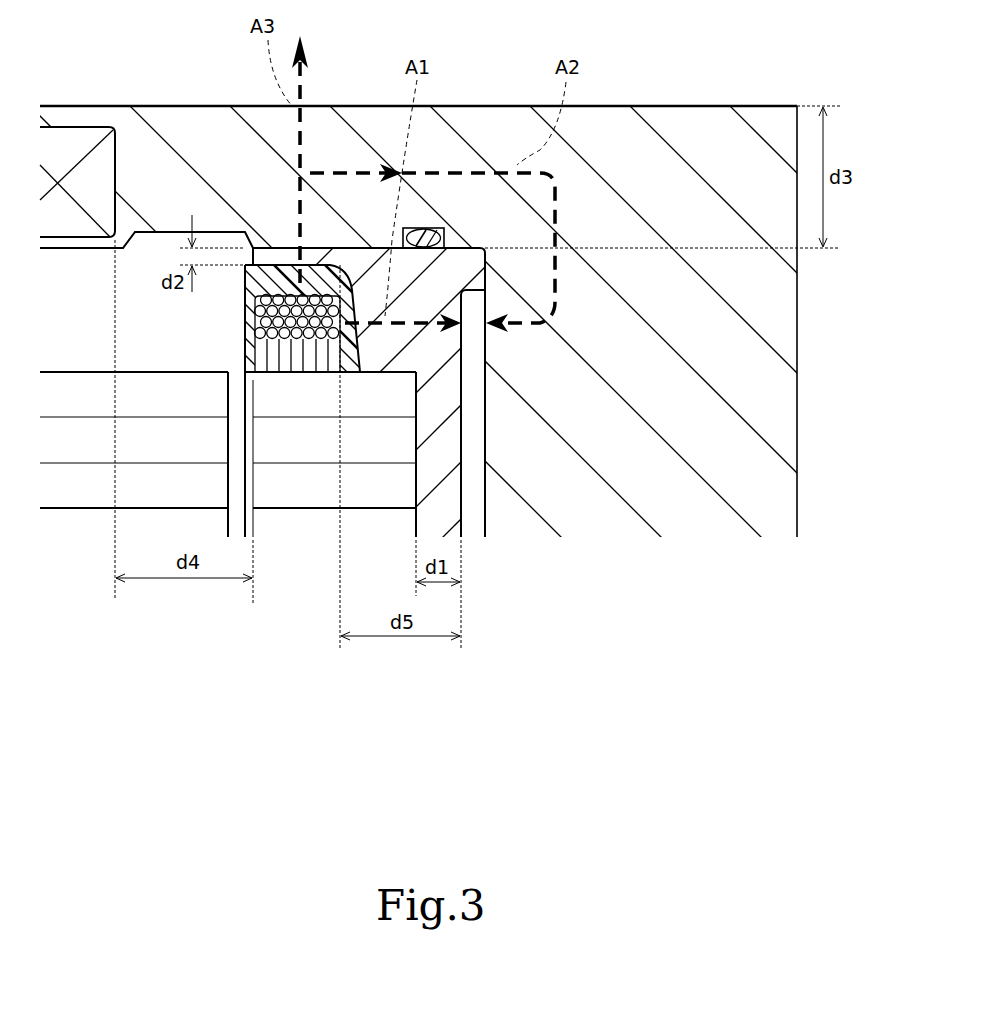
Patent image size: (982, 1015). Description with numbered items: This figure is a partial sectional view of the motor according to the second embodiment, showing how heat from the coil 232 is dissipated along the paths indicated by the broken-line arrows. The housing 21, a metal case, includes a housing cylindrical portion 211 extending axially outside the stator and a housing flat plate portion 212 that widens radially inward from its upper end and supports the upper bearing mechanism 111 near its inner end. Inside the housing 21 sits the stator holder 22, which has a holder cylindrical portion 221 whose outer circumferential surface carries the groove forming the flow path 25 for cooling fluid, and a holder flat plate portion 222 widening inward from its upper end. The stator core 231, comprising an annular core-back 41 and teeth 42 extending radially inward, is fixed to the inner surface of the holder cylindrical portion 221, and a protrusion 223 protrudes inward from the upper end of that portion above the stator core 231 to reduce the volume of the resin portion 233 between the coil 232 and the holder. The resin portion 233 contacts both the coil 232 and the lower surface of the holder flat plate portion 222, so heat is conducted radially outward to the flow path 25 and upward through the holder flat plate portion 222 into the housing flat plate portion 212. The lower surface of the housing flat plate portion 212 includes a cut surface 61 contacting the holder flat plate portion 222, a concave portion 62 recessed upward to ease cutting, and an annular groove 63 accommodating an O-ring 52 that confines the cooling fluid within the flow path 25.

The housing 21 is at (501, 286).
The housing cylindrical portion 211 is at (777, 490).
The housing flat plate portion 212 is at (325, 130).
The upper bearing mechanism 111 is at (74, 138).
The concave portion 62 is at (158, 232).
The holder flat plate portion 222 is at (288, 262).
The stator holder 22 is at (617, 430).
The holder cylindrical portion 221 is at (440, 450).
The protrusion 223 is at (378, 348).
The flow path 25 is at (472, 422).
The O-ring 52 is at (470, 143).
The annular groove 63 is at (423, 228).
The cut surface 61 is at (388, 250).
The resin portion 233 is at (267, 278).
The coil 232 is at (260, 333).
The stator core 231 is at (228, 483).
The teeth 42 is at (300, 482).
The core-back 41 is at (375, 482).